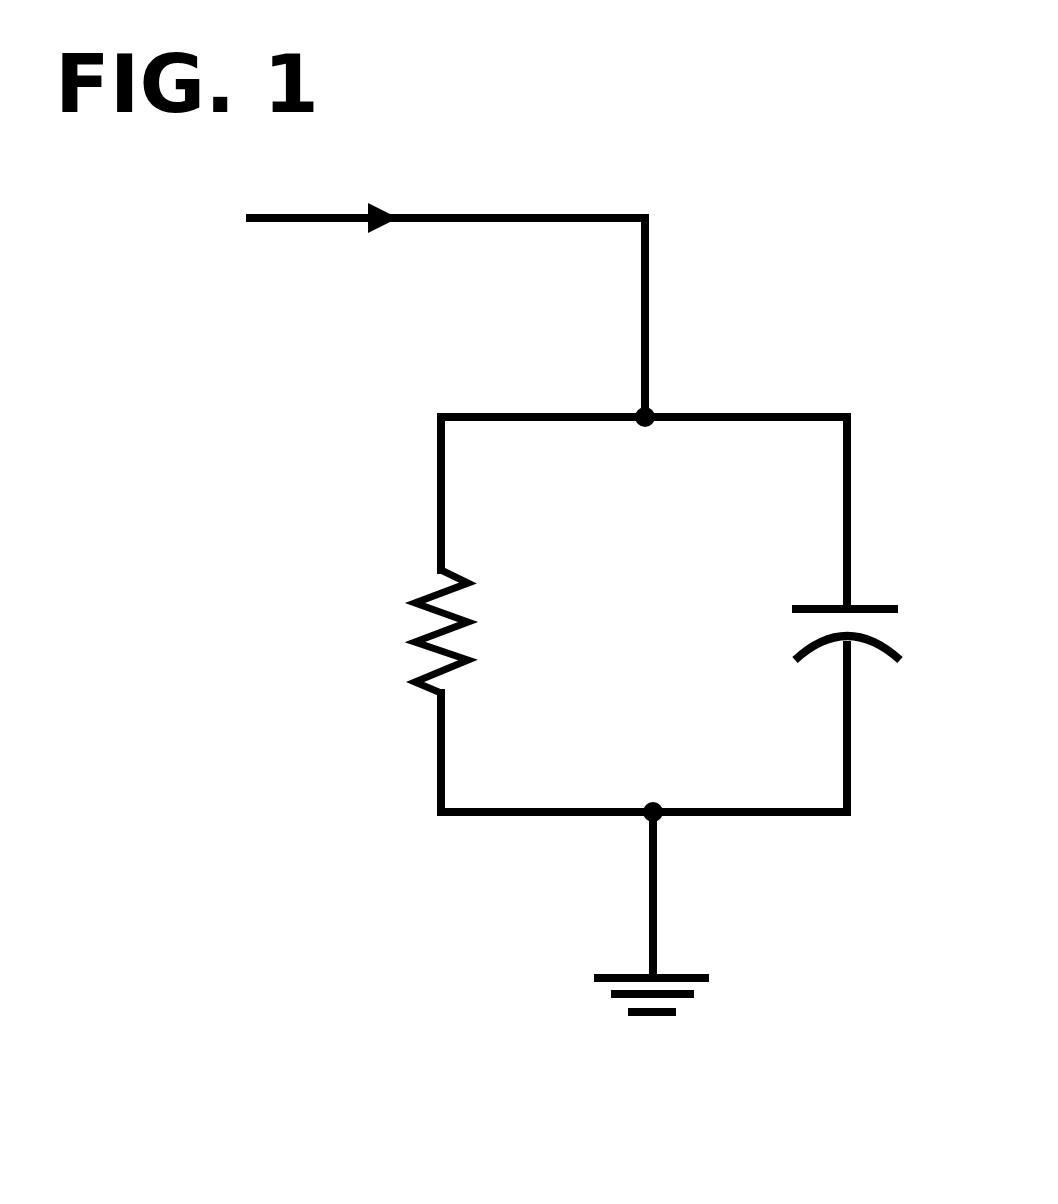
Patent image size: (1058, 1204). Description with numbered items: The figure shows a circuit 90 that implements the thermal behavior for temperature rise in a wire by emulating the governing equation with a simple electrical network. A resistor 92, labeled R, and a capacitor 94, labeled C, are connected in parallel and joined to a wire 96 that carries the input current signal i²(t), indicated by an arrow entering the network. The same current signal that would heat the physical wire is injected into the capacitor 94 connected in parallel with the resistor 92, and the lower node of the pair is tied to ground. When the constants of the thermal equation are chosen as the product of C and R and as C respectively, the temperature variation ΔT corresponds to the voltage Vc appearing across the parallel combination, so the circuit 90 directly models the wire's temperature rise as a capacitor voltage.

The circuit 90 is at (636, 121).
The resistor 92 is at (412, 627).
The capacitor 94 is at (790, 641).
The wire 96 is at (510, 226).